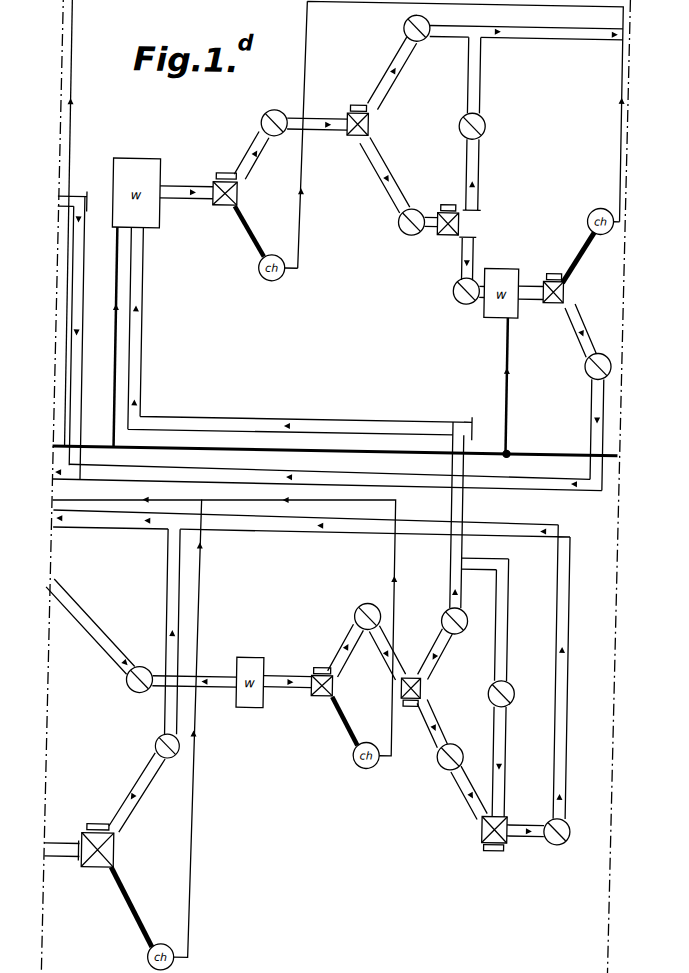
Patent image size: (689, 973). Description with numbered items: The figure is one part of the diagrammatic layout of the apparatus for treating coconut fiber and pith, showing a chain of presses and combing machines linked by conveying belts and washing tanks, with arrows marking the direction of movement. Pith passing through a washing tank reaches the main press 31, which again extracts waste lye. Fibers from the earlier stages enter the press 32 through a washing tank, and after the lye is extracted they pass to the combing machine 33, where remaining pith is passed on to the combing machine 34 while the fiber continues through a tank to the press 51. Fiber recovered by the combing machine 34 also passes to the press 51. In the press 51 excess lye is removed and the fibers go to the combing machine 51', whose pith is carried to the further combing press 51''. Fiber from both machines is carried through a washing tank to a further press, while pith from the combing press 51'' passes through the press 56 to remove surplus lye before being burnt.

The press 31 is at (121, 856).
The press 32 is at (319, 668).
The combing machine 33 is at (425, 688).
The combing machine 34 is at (488, 830).
The press 51 is at (248, 189).
The combing machine 51' is at (380, 120).
The combing press 51'' is at (435, 236).
The press 56 is at (561, 289).